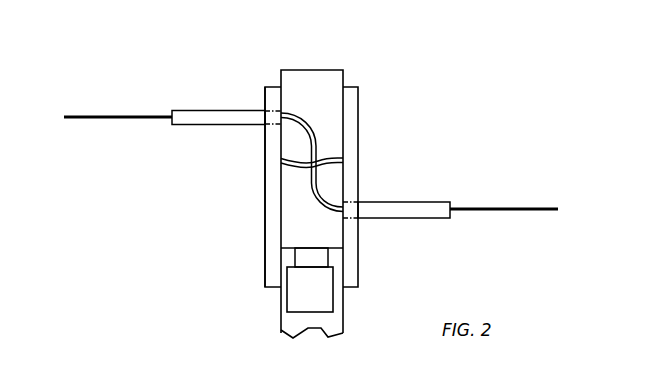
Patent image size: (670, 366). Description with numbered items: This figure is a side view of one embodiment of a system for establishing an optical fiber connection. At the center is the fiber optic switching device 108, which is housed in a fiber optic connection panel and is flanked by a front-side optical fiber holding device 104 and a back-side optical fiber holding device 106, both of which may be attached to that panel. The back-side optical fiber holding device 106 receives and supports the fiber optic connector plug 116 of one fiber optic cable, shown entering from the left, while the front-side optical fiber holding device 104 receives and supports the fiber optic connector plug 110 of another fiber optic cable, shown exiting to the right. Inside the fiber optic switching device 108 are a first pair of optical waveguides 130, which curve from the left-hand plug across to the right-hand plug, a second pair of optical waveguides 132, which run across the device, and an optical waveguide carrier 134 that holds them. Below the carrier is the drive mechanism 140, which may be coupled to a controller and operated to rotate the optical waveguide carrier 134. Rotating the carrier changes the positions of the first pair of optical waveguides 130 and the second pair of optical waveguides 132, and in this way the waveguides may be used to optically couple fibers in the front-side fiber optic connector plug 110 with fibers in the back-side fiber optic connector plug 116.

The front-side optical fiber holding device 104 is at (357, 244).
The back-side optical fiber holding device 106 is at (271, 167).
The fiber optic switching device 108 is at (299, 64).
The fiber optic connector plug 110 is at (405, 207).
The fiber optic connector plug 116 is at (212, 117).
The first pair of optical waveguides 130 is at (306, 105).
The second pair of optical waveguides 132 is at (297, 167).
The optical waveguide carrier 134 is at (325, 230).
The drive mechanism 140 is at (328, 296).